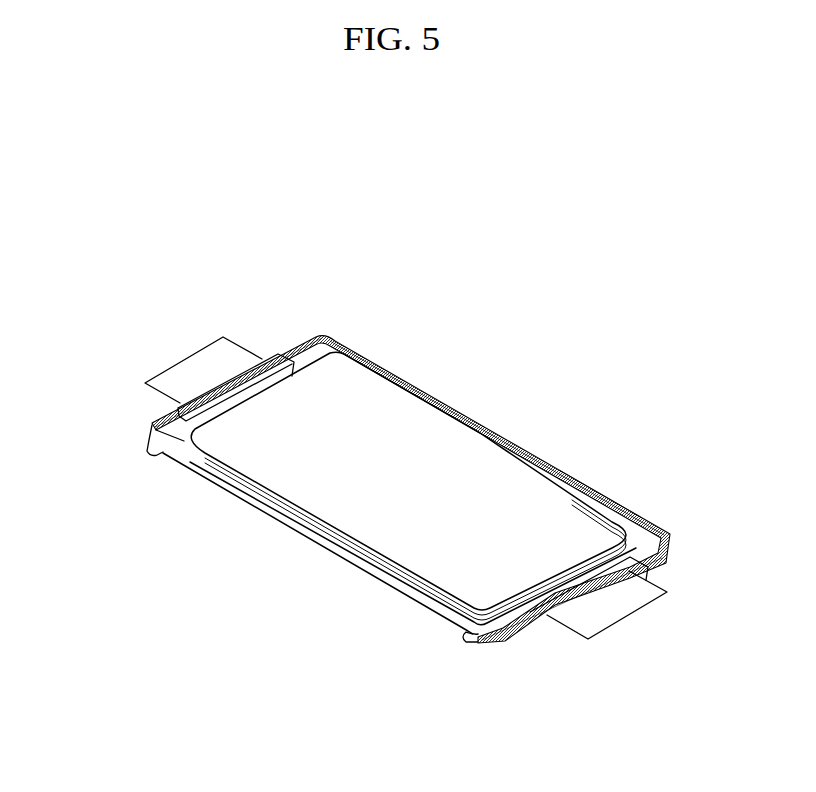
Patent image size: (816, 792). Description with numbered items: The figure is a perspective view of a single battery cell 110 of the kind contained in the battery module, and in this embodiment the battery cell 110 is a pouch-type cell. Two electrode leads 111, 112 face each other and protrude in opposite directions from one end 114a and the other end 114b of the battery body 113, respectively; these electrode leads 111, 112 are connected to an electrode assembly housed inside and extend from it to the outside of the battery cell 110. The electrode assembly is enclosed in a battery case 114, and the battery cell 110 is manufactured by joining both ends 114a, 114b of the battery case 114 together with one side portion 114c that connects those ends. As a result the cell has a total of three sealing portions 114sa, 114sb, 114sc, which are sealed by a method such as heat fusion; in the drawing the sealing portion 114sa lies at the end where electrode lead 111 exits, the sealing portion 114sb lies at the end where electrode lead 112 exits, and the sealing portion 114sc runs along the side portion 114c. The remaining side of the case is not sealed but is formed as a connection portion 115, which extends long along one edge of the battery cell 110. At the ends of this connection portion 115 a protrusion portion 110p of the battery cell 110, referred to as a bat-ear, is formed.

The battery cell 110 is at (102, 238).
The protrusion portion 110p is at (150, 440).
The electrode lead 111 is at (200, 367).
The electrode lead 112 is at (633, 615).
The battery body 113 is at (417, 423).
The battery case 114 is at (430, 495).
The one end 114a is at (308, 340).
The other end 114b is at (505, 628).
The one side portion 114c is at (505, 437).
The sealing portion 114sa is at (287, 345).
The sealing portion 114sb is at (662, 558).
The sealing portion 114sc is at (590, 490).
The connection portion 115 is at (342, 553).